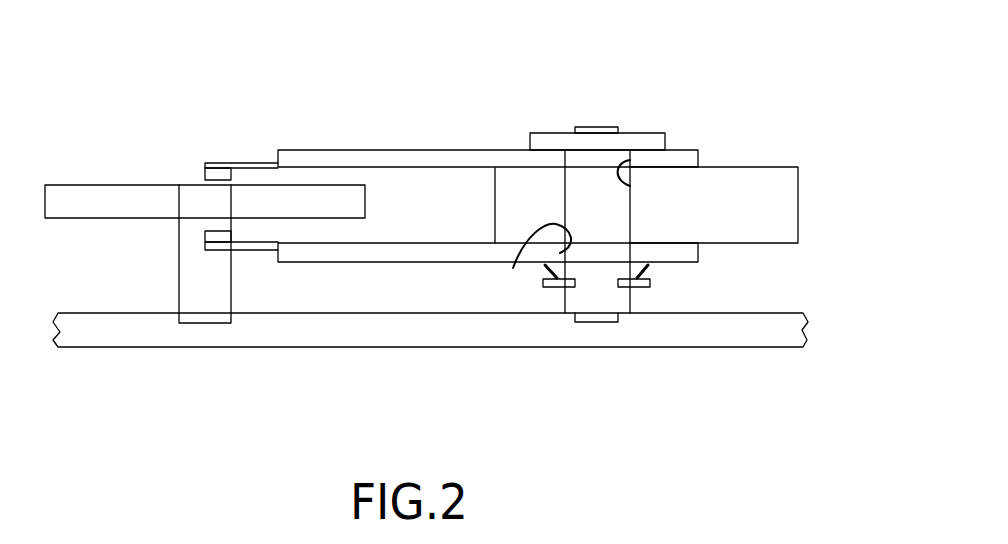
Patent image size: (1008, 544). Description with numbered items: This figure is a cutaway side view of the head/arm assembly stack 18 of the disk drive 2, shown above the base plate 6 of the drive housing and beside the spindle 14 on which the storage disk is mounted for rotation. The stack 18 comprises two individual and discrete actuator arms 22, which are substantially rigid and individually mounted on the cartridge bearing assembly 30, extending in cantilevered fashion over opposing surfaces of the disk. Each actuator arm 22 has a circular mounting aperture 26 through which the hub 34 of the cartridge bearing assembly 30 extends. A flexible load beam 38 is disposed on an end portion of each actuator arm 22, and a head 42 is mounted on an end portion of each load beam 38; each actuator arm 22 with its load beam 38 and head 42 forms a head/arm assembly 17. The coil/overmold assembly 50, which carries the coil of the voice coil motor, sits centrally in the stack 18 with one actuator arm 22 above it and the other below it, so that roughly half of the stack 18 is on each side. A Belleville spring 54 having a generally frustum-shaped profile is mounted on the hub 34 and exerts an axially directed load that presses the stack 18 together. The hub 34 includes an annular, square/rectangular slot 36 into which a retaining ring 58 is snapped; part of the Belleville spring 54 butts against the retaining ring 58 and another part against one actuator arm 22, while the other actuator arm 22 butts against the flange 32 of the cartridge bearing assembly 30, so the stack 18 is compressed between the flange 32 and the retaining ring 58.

The disk drive 2 is at (638, 95).
The base plate 6 is at (88, 197).
The spindle 14 is at (193, 275).
The head/arm assembly 17 is at (303, 137).
The head/arm assembly stack 18 is at (470, 135).
The actuator arm 22 is at (352, 148).
The mounting aperture 26 is at (640, 188).
The cartridge bearing assembly 30 is at (652, 133).
The flange 32 is at (547, 142).
The hub 34 is at (595, 293).
The slot 36 is at (620, 282).
The load beam 38 is at (248, 162).
The head 42 is at (205, 172).
The coil/overmold assembly 50 is at (790, 210).
The Belleville spring 54 is at (652, 270).
The retaining ring 58 is at (646, 288).